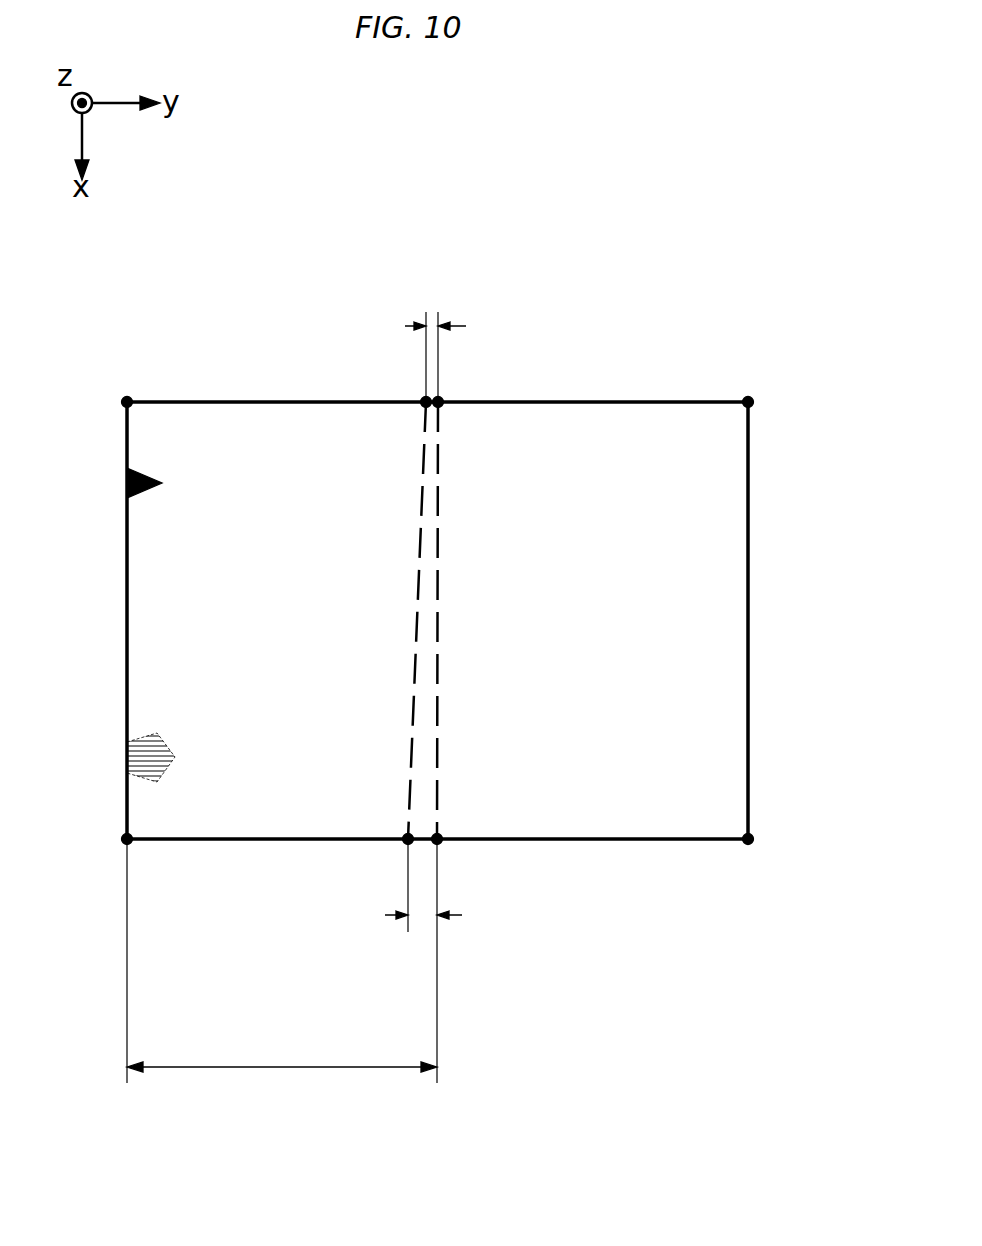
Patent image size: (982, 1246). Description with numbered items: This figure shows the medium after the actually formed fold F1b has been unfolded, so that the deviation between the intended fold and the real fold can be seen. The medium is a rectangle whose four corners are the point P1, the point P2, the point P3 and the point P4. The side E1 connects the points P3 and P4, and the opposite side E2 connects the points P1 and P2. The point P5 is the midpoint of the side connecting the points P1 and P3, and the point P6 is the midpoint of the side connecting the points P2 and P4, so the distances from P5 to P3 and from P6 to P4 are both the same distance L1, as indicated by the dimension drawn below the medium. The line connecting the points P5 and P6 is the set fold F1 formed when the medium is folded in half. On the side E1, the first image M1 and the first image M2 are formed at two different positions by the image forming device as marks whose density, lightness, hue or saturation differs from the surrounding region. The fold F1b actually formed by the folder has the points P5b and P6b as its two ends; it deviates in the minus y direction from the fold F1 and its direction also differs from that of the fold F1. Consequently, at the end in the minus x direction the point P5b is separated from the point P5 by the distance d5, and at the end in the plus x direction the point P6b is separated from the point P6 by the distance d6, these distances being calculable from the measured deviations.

The point P1 is at (750, 400).
The point P2 is at (750, 841).
The point P3 is at (127, 402).
The point P4 is at (125, 842).
The point P5 is at (440, 402).
The point P5b is at (426, 404).
The point P6 is at (440, 842).
The point P6b is at (406, 836).
The side E1 is at (125, 635).
The side E2 is at (750, 605).
The first image M1 is at (127, 487).
The first image M2 is at (135, 758).
The fold F1 is at (440, 687).
The fold F1b is at (416, 673).
The distance d5 is at (417, 354).
The distance d6 is at (403, 888).
The distance L1 is at (282, 964).